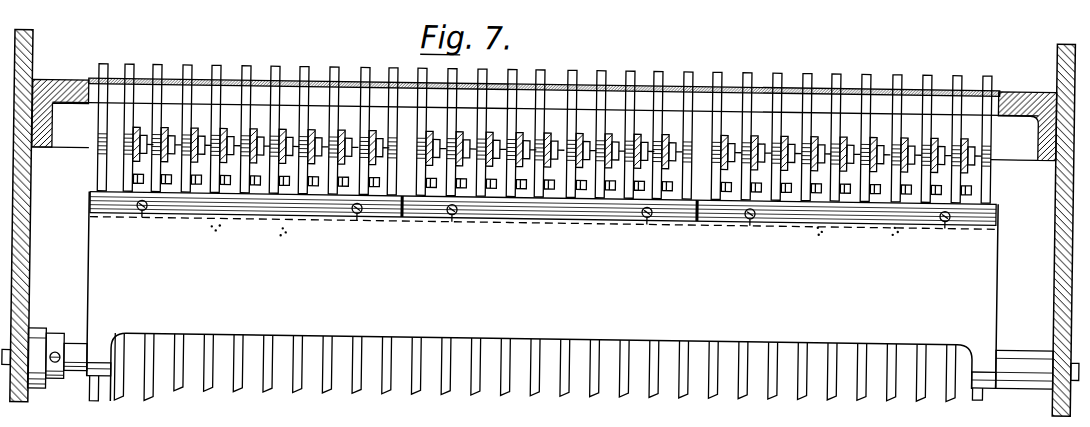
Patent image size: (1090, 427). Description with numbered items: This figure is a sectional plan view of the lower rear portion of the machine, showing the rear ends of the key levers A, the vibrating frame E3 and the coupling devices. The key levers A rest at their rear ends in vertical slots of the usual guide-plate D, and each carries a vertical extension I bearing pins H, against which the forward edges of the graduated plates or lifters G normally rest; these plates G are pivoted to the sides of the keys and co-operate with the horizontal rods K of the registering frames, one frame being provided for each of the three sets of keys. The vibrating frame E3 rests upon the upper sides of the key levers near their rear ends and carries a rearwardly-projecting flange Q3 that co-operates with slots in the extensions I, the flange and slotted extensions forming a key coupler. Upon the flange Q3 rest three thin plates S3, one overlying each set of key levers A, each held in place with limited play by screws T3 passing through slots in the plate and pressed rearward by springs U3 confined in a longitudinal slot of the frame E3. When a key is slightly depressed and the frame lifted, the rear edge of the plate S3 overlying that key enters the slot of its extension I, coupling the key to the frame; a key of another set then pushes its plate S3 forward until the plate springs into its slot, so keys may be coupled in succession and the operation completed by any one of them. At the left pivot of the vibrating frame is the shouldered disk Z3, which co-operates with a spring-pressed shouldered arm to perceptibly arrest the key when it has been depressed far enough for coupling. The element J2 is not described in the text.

The guide-plate D is at (226, 86).
The graduated plates or lifters G is at (279, 139).
The pins H is at (430, 185).
The vertical extensions of the key levers I is at (97, 181).
The horizontal rods of the registering frames K is at (970, 184).
The rearwardly-projecting flange Q3 is at (92, 207).
The thin plate S3 is at (261, 215).
The screws T3 is at (544, 225).
The springs U3 is at (142, 234).
The vibrating frame E3 is at (542, 290).
The comb plate J2 is at (541, 380).
The key levers A is at (382, 389).
The shouldered disk Z3 is at (35, 350).